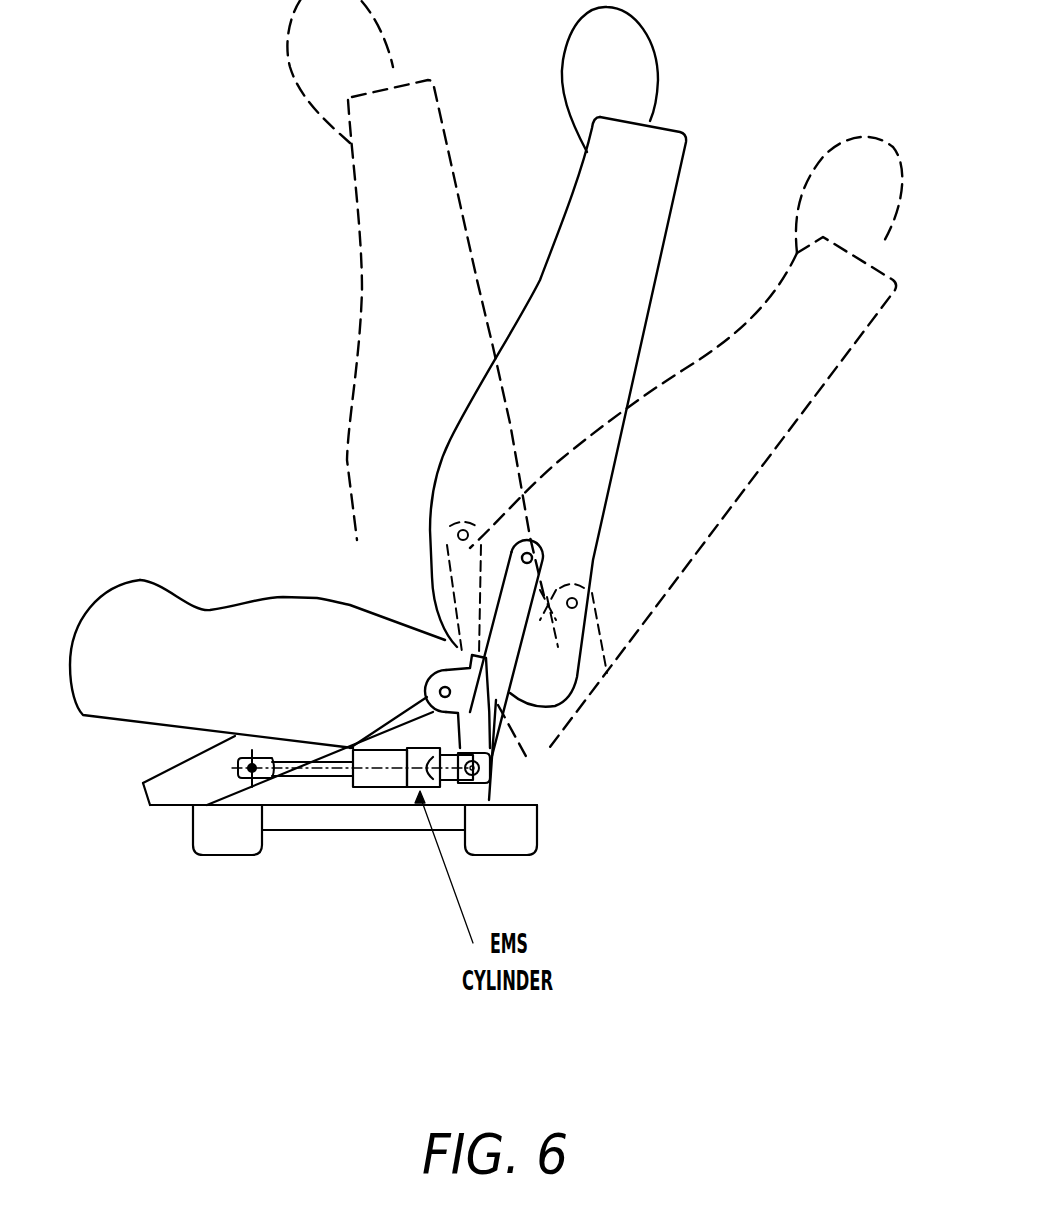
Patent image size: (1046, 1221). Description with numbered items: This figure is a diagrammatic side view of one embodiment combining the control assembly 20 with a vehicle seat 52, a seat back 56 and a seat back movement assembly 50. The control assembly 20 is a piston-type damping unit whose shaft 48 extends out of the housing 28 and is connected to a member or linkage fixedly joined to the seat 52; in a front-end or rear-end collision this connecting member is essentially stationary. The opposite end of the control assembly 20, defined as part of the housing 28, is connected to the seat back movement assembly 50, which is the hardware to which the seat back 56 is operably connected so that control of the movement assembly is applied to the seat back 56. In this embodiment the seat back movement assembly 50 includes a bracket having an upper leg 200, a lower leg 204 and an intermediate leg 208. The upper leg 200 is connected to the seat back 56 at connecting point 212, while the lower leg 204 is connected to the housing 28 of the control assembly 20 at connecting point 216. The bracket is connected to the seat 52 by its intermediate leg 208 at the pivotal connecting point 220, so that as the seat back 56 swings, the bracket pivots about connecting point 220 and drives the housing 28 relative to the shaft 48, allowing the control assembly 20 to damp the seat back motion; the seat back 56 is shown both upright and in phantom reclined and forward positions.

The control assembly 20 is at (351, 790).
The housing 28 is at (450, 783).
The shaft 48 is at (303, 772).
The seat back movement assembly 50 is at (518, 720).
The vehicle seat 52 is at (172, 614).
The vehicle seat back 56 is at (648, 207).
The upper leg 200 is at (500, 615).
The lower leg 204 is at (497, 732).
The intermediate leg 208 is at (462, 656).
The connecting point 212 is at (517, 525).
The connecting point 216 is at (484, 774).
The pivotal connecting point 220 is at (425, 691).